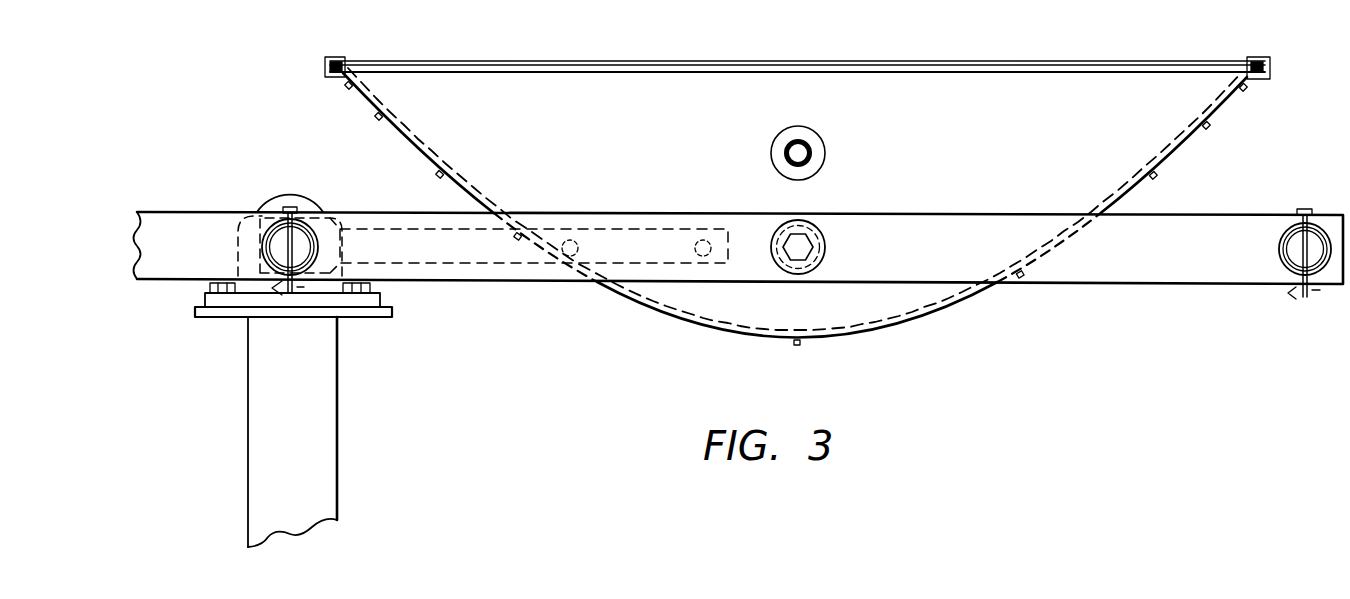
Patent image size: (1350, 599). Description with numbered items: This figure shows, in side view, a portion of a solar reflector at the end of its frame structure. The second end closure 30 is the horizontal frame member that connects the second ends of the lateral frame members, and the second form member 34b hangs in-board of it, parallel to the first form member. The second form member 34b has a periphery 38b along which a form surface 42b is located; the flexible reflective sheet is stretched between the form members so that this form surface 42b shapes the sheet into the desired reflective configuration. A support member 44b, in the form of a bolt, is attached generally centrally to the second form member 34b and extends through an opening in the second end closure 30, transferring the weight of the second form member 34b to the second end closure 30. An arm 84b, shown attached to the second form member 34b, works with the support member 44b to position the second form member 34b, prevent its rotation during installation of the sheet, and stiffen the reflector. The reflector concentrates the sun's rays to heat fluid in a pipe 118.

The second end closure 30 is at (1205, 215).
The second form member 34b is at (1037, 144).
The periphery 38b is at (959, 299).
The form surface 42b is at (882, 322).
The support member 44b is at (804, 242).
The arm 84b is at (373, 228).
The pipe 118 is at (806, 144).